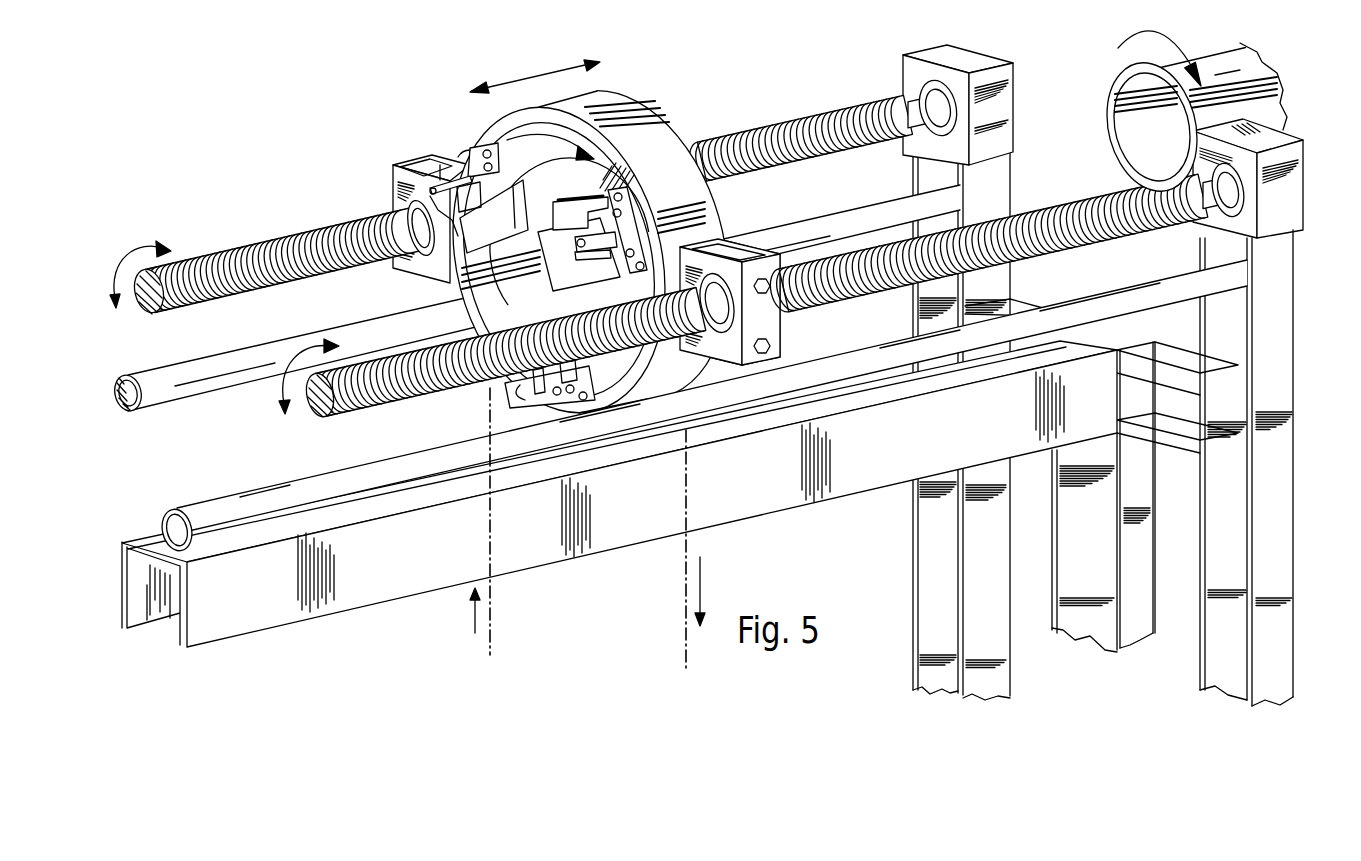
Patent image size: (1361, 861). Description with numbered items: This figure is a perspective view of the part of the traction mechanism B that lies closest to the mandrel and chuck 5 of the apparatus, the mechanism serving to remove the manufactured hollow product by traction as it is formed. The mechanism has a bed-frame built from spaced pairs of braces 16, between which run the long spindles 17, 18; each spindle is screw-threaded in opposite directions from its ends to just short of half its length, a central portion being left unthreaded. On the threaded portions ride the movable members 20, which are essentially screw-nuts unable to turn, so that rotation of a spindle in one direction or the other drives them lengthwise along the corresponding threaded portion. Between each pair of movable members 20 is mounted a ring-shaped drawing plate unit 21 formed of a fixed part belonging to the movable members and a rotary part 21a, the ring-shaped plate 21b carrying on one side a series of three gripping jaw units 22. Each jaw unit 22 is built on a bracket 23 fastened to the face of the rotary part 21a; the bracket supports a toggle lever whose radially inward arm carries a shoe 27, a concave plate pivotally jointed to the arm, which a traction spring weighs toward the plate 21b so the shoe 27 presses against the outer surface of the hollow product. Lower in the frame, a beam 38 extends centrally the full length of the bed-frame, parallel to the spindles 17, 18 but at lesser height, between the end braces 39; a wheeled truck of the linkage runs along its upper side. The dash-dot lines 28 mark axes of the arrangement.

The chuck 5 is at (1108, 92).
The braces 16 is at (997, 176).
The spindle 17 is at (805, 110).
The spindle 18 is at (1092, 190).
The movable members 20 is at (392, 203).
The ring-shaped drawing plate unit 21 is at (574, 249).
The rotary part 21a is at (490, 122).
The ring-shaped plate 21b is at (487, 137).
The gripping jaw units 22 is at (483, 256).
The bracket 23 is at (640, 228).
The shoe 27 is at (543, 178).
The axis 28 is at (494, 612).
The beam 38 is at (787, 499).
The end braces 39 is at (1093, 628).
The traction mechanism B is at (326, 108).